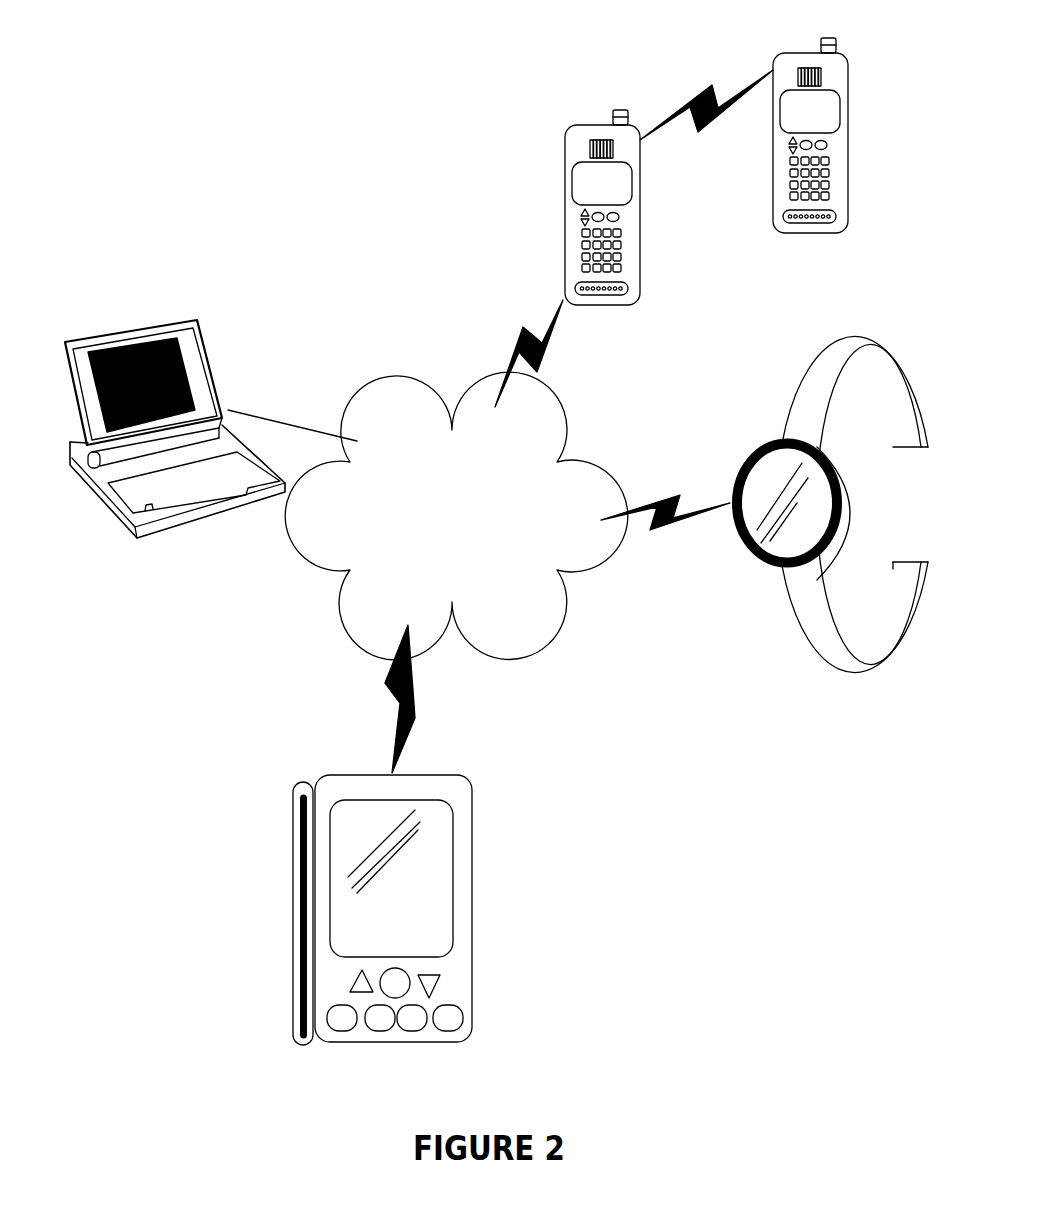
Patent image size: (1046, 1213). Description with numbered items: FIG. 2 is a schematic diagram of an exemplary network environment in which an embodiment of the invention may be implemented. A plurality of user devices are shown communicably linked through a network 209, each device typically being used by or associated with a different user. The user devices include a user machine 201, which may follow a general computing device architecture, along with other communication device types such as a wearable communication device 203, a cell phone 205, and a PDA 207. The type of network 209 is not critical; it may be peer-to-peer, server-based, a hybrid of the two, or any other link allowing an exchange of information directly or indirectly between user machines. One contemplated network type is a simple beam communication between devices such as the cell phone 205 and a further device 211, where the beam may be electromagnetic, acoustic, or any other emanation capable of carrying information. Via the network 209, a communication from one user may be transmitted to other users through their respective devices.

The user device 201 is at (213, 313).
The wearable communication device 203 is at (872, 333).
The cell phone 205 is at (593, 125).
The PDA 207 is at (465, 768).
The network 209 is at (456, 516).
The device 211 is at (850, 68).